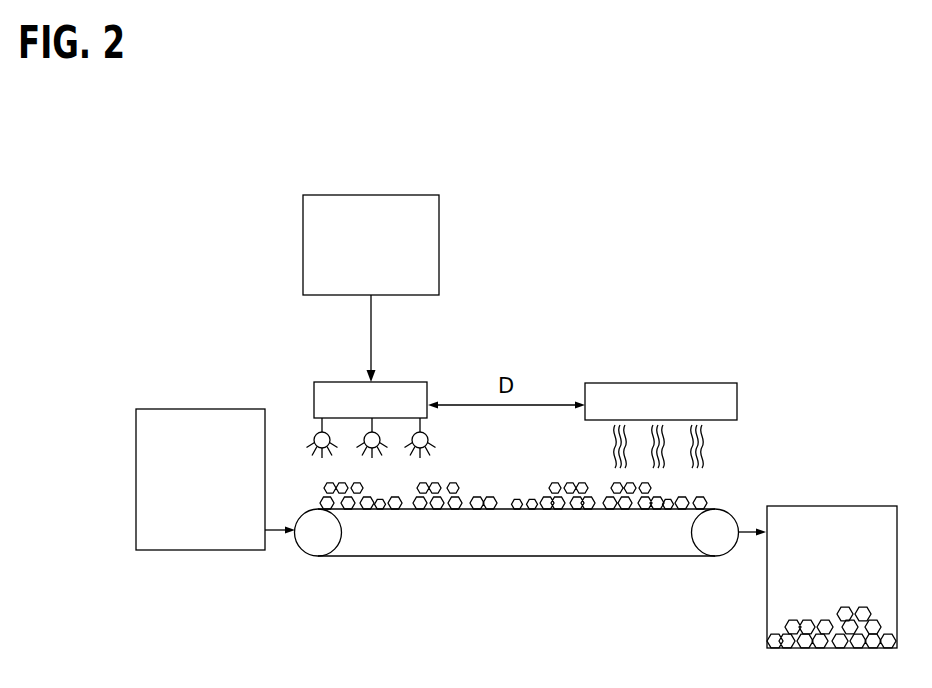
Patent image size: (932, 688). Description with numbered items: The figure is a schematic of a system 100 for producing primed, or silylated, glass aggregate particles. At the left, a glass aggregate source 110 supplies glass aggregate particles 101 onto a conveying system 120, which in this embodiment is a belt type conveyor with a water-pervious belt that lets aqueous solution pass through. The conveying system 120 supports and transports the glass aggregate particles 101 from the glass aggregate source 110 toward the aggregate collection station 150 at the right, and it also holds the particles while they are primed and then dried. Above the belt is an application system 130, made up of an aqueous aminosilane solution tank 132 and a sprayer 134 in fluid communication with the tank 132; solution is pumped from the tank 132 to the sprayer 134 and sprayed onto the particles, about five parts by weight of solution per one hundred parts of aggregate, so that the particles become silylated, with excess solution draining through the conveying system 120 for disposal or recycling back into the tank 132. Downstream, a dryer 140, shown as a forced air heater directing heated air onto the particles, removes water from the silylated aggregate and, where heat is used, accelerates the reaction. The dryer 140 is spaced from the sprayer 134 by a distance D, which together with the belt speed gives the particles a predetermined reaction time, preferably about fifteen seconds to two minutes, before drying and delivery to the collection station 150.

The system 100 is at (162, 266).
The glass aggregate particles 101 is at (572, 490).
The glass aggregate source 110 is at (217, 490).
The conveying system 120 is at (481, 542).
The application system 130 is at (292, 219).
The aqueous aminosilane solution tank 132 is at (387, 256).
The sprayer 134 is at (387, 410).
The dryer 140 is at (677, 412).
The aggregate collection station 150 is at (848, 588).